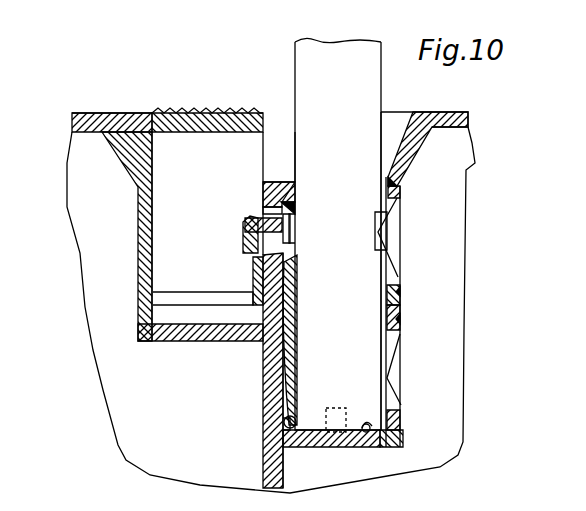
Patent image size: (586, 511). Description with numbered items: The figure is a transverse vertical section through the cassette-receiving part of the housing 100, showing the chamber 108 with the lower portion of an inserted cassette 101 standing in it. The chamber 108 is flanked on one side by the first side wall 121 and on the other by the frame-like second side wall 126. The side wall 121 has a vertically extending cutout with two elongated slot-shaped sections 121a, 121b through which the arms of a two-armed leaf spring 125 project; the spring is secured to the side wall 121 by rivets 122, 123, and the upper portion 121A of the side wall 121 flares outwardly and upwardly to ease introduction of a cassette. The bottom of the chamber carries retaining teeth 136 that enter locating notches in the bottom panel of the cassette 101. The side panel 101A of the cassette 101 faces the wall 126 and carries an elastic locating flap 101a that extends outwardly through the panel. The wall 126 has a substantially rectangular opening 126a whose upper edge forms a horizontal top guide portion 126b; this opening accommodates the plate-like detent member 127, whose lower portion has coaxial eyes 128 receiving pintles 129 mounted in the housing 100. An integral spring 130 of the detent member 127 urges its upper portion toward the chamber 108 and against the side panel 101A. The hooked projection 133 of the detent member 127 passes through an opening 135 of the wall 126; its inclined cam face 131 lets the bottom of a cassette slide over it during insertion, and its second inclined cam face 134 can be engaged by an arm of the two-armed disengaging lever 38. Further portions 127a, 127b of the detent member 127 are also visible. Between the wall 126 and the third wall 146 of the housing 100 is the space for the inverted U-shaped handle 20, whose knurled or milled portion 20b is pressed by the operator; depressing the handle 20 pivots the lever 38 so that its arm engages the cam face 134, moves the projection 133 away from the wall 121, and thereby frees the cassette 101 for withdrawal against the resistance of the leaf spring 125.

The housing 100 is at (84, 312).
The third wall 146 is at (138, 202).
The inverted U-shaped handle 20 is at (167, 112).
The knurled or milled portion 20b is at (204, 110).
The two-armed disengaging lever 38 is at (257, 277).
The cassette 101 is at (306, 42).
The side panel 101A is at (295, 68).
The horizontal top guide portion 126b is at (280, 182).
The frame-like second side wall 126 is at (260, 186).
The opening 135 is at (263, 210).
The inclined cam face 131 is at (296, 207).
The latch arm 127a is at (297, 185).
The hooked projection 133 is at (263, 217).
The second inclined cam face 134 is at (243, 246).
The latch finger 127b is at (295, 224).
The elastic locating flaps 101a is at (294, 236).
The rectangular opening 126a is at (263, 348).
The plate-like detent member 127 is at (278, 392).
The coaxial eyes 128 is at (267, 427).
The integral spring 130 is at (298, 338).
The pintles 129 is at (296, 421).
The retaining protuberances or teeth 136 is at (332, 451).
The chamber 108 is at (382, 448).
The upper portion of the side wall 121A is at (414, 142).
The first side wall 121 is at (403, 302).
The slot-shaped section 121a is at (396, 235).
The rivet 122 is at (401, 291).
The rivet 123 is at (401, 319).
The two-armed leaf spring 125 is at (398, 350).
The slot-shaped section 121b is at (398, 386).